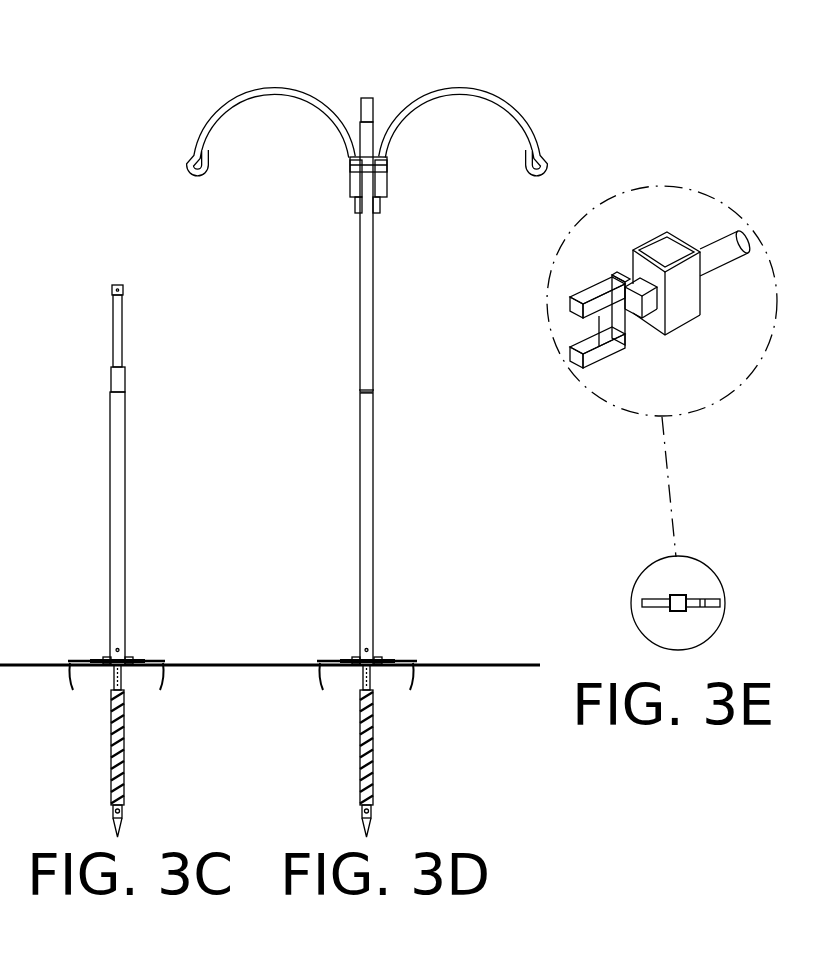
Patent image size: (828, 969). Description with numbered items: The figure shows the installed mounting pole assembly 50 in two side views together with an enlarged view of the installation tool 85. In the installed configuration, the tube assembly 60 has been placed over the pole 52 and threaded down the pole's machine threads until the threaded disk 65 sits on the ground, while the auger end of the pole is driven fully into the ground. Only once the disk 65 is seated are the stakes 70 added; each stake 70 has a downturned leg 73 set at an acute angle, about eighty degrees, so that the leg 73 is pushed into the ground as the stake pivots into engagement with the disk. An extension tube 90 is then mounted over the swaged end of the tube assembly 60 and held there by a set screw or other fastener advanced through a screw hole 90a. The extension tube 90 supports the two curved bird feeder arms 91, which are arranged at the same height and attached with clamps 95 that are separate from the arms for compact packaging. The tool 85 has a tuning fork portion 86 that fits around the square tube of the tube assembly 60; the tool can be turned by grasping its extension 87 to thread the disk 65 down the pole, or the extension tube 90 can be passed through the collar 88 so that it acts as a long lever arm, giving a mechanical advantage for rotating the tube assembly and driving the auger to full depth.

In FIG. 3C, the mounting pole assembly 50 is at (163, 475).
In FIG. 3C, the pole 52 is at (118, 332).
In FIG. 3C, the tube assembly 60 is at (125, 537).
In FIG. 3C, the disk 65 is at (128, 658).
In FIG. 3C, the stake 70 is at (75, 660).
In FIG. 3C, the downturned leg 73 is at (72, 685).
In FIG. 3D, the extension tube 90 is at (374, 283).
In FIG. 3D, the screw hole 90a is at (368, 376).
In FIG. 3D, the bird feeder arms 91 is at (263, 92).
In FIG. 3D, the clamps 95 is at (350, 168).
In FIG. 3E, the tool 85 is at (647, 238).
In FIG. 3E, the tuning fork portion 86 is at (587, 293).
In FIG. 3E, the extension 87 is at (720, 245).
In FIG. 3E, the collar 88 is at (680, 302).